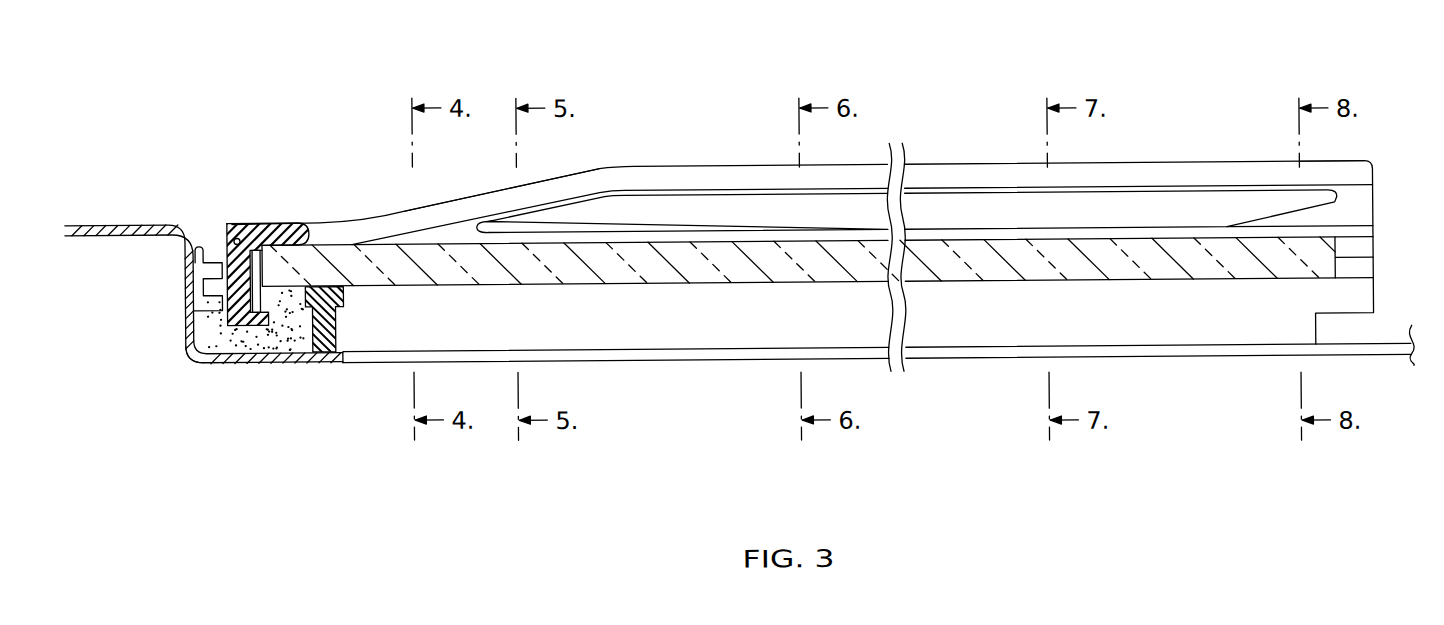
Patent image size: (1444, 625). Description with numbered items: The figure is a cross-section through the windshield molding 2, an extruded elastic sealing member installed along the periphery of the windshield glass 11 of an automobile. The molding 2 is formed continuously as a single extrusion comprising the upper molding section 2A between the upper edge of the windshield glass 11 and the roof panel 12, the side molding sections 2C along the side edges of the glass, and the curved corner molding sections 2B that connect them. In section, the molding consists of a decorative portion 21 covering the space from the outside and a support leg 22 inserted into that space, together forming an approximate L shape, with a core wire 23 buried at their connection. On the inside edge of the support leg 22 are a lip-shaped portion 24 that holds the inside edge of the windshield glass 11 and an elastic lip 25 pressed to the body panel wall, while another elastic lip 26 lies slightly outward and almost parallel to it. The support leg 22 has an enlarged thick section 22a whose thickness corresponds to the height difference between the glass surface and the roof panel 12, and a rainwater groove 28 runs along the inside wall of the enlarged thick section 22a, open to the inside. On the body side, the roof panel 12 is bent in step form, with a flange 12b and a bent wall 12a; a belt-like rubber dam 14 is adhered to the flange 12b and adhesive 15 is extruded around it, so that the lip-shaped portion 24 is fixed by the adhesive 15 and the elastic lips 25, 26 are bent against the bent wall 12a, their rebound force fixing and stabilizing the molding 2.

The windshield molding 2 is at (714, 140).
The upper molding section 2A is at (247, 190).
The corner molding section 2B is at (388, 196).
The side molding section 2C is at (1170, 158).
The windshield glass 11 is at (733, 276).
The roof panel 12 is at (122, 224).
The bent wall 12a is at (183, 287).
The flange 12b is at (293, 361).
The rubber dam 14 is at (333, 318).
The adhesive 15 is at (240, 344).
The decorative portion 21 is at (279, 224).
The support leg 22 is at (208, 352).
The enlarged thick section 22a is at (1000, 247).
The wire 23 is at (230, 225).
The lip-shaped portion 24 is at (268, 331).
The elastic lip 25 is at (184, 336).
The elastic lip 26 is at (185, 258).
The rainwater groove 28 is at (962, 214).